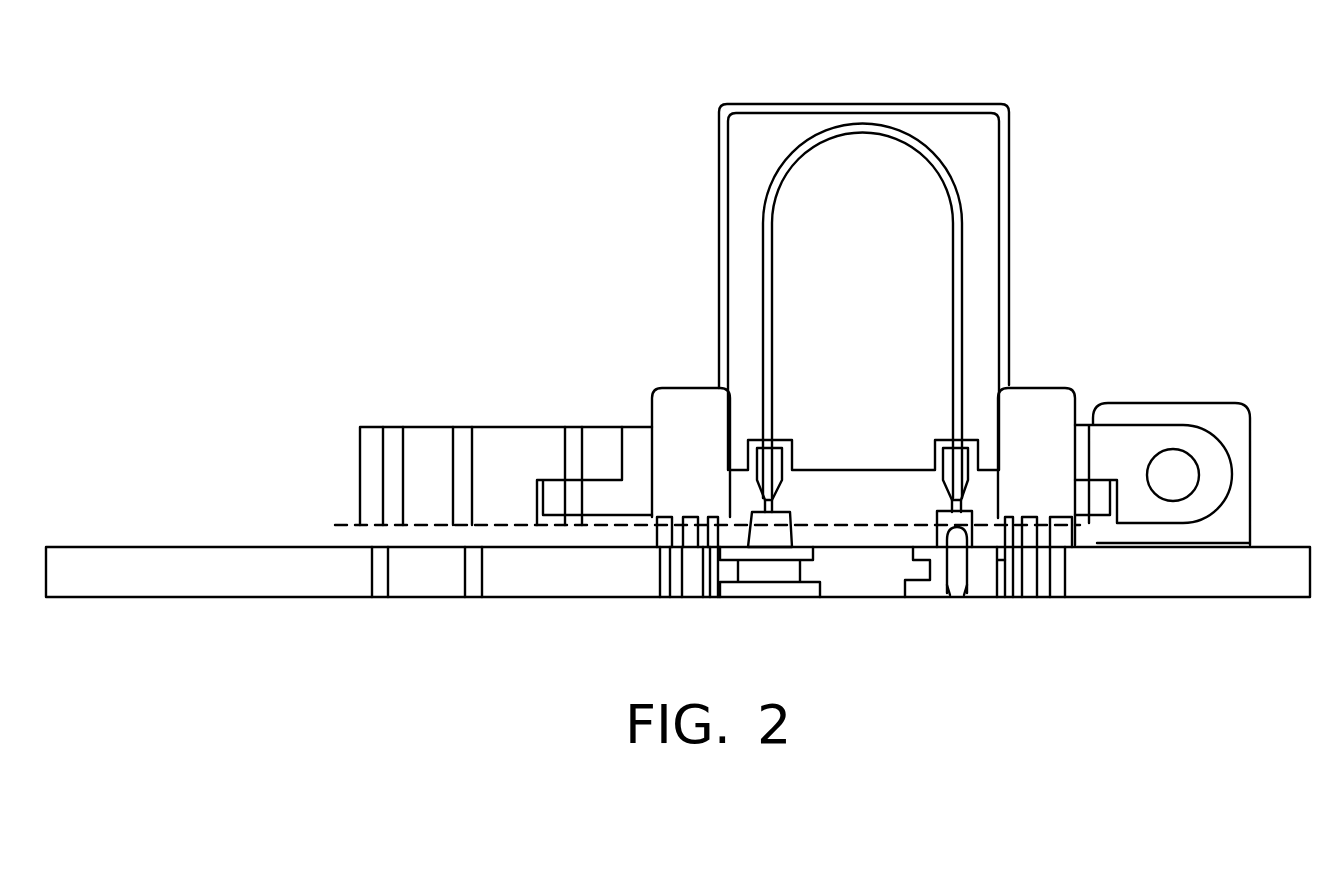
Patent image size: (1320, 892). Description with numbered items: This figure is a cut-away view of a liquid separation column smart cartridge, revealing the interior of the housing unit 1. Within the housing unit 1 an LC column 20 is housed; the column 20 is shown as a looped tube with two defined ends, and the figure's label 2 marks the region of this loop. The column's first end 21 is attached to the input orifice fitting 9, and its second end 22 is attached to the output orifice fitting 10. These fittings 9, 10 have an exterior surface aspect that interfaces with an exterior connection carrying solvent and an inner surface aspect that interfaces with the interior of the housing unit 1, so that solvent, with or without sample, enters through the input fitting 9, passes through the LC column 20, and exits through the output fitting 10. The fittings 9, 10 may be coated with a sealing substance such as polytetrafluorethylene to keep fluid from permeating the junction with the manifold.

The housing unit 1 is at (769, 96).
The wire loop 2 is at (862, 182).
The LC column 20 is at (958, 168).
The first end 21 is at (975, 492).
The second end 22 is at (748, 502).
The output orifice fitting 10 is at (802, 503).
The input orifice fitting 9 is at (983, 540).